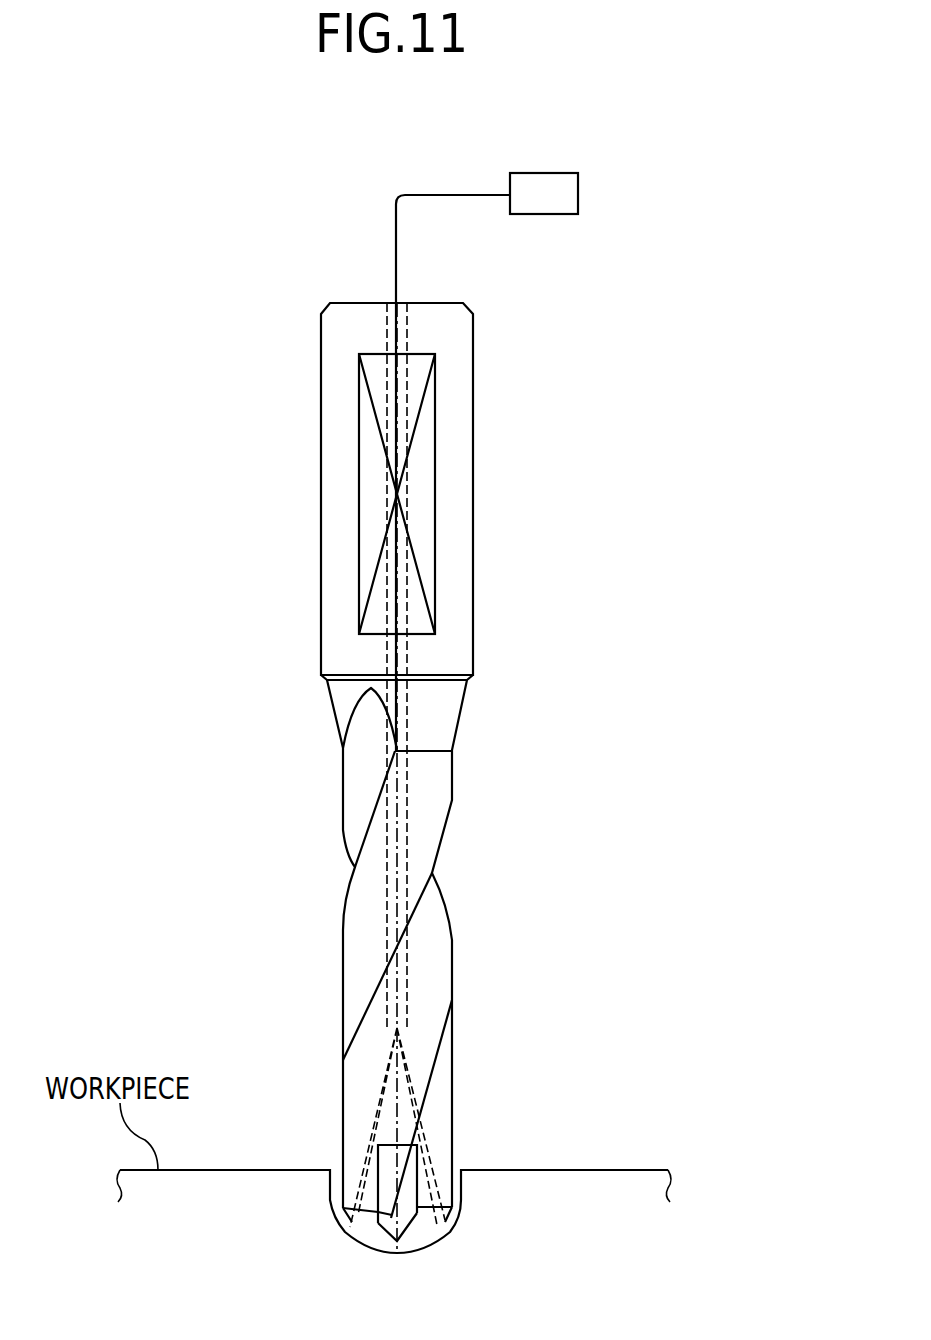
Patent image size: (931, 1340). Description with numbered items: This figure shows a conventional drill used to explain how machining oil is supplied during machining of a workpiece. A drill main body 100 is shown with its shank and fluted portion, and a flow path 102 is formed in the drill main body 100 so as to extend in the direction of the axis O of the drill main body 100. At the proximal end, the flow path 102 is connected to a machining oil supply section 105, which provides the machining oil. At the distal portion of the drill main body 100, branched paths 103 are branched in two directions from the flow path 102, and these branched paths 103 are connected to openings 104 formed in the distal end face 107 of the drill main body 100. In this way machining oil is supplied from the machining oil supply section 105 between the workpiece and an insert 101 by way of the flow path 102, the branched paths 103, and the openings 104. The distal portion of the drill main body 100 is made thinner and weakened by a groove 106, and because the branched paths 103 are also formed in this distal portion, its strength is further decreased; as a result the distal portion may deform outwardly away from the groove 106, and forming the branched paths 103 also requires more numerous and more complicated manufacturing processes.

The drill main body 100 is at (360, 924).
The insert 101 is at (388, 1165).
The flow path 102 is at (393, 712).
The branched paths 103 is at (370, 1105).
The openings 104 is at (352, 1223).
The machining oil supply section 105 is at (546, 190).
The groove 106 is at (385, 1188).
The distal end face 107 is at (430, 1218).
The axis O is at (396, 335).